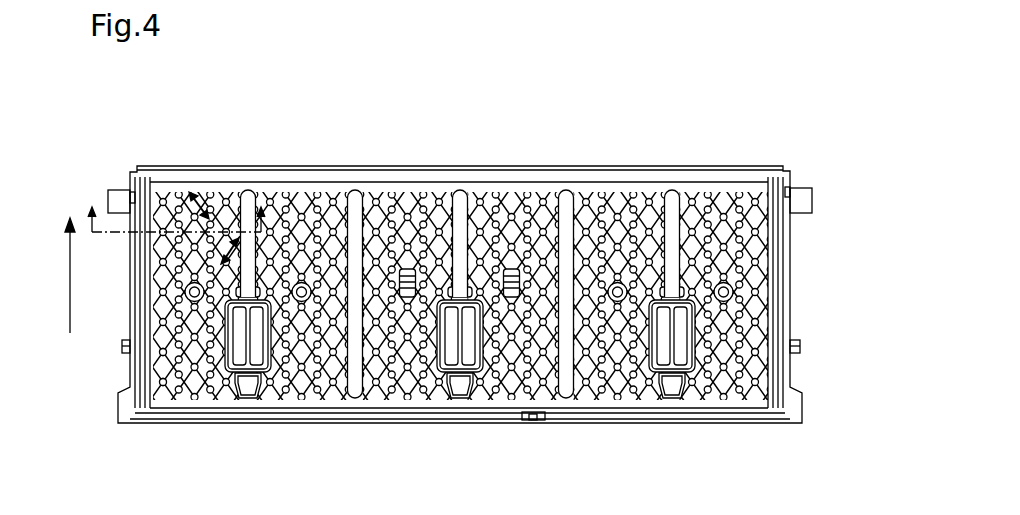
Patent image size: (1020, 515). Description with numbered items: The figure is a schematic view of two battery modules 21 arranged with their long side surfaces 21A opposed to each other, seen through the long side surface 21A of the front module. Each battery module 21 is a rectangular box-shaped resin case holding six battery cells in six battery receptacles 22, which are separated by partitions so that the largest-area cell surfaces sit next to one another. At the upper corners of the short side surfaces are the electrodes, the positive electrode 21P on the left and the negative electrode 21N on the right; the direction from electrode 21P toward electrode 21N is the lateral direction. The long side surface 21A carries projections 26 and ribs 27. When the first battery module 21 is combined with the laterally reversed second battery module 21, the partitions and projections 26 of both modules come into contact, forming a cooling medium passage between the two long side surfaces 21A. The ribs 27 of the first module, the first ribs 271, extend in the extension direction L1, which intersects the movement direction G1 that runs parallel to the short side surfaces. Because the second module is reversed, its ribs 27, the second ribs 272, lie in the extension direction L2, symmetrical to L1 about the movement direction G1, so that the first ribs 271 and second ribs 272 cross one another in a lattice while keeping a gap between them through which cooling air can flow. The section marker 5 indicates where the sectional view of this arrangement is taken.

The battery module 21 is at (745, 166).
The long side surface 21A is at (757, 218).
The positive electrode 21P is at (110, 190).
The negative electrode 21N is at (803, 188).
The battery receptacle 22 is at (222, 190).
The projection 26 is at (162, 381).
The rib 27 is at (459, 415).
The first rib 271 is at (203, 383).
The second rib 272 is at (190, 392).
The section line 5- 5 is at (175, 207).
The movement direction G1 is at (70, 318).
The extension direction L1 is at (192, 196).
The extension direction L2 is at (237, 240).